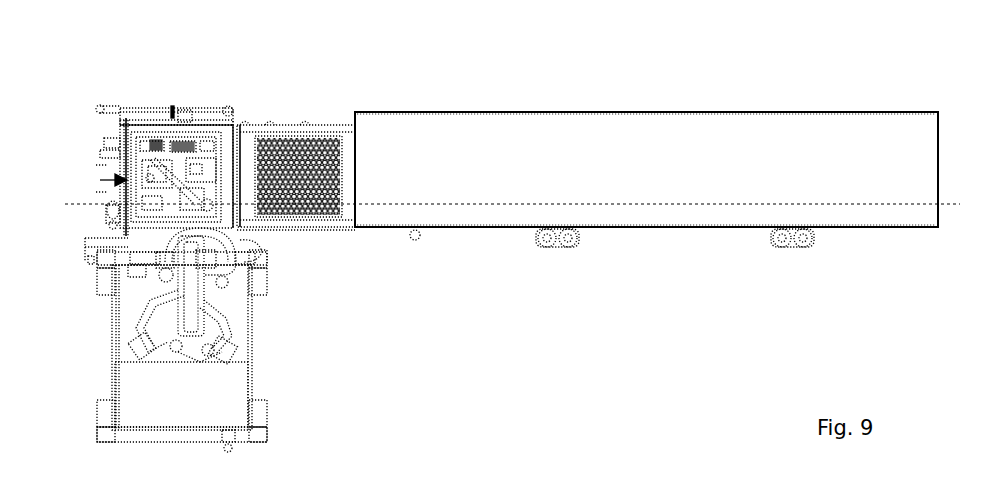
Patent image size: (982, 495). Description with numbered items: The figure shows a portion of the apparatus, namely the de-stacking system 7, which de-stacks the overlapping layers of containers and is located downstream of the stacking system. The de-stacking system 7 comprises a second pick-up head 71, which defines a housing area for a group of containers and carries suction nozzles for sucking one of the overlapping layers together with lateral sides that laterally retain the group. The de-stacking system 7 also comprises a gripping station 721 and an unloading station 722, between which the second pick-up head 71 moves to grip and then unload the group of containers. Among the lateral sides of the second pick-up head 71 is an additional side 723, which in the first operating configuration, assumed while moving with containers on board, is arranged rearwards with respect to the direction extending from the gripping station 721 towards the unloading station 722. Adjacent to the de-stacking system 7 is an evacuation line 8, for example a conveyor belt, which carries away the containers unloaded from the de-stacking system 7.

The de-stacking system 7 is at (252, 246).
The second pick-up head 71 is at (132, 114).
The gripping station 721 is at (166, 94).
The unloading station 722 is at (291, 120).
The additional side 723 is at (113, 203).
The evacuation line 8 is at (570, 256).